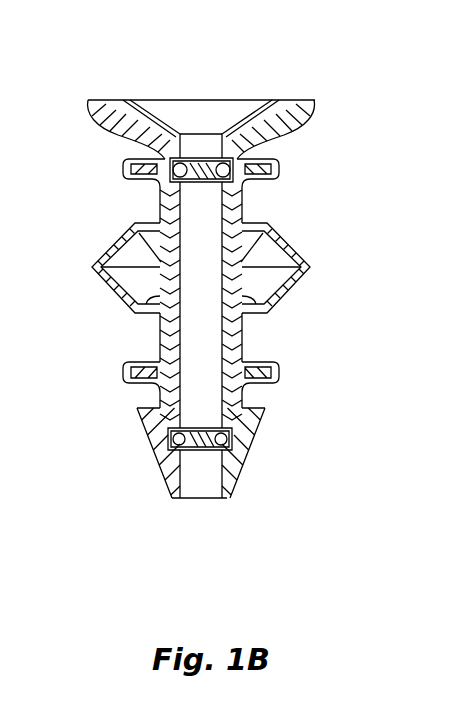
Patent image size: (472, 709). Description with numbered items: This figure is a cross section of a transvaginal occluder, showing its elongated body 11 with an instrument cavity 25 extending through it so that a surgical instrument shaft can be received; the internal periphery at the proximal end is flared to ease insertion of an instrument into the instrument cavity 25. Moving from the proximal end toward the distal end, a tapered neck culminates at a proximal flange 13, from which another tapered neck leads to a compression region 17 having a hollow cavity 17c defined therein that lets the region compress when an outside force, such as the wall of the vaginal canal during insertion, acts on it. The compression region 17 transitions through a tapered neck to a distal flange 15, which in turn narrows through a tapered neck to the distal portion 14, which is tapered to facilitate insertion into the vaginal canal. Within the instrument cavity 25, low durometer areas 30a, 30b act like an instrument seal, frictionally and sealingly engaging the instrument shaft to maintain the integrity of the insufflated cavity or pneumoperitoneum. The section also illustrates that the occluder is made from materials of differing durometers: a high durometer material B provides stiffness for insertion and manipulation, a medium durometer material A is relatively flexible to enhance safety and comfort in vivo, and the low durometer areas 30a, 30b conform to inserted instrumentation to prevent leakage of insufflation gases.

The instrument cavity 25 is at (213, 123).
The medium durometer material A is at (96, 110).
The high durometer material B is at (280, 110).
The low durometer area 30a is at (195, 157).
The proximal flange 13 is at (276, 173).
The elongated body 11 is at (244, 203).
The compression region 17 is at (295, 250).
The hollow cavity 17c is at (132, 275).
The distal flange 15 is at (279, 380).
The distal portion 14 is at (230, 499).
The low durometer area 30b is at (212, 439).